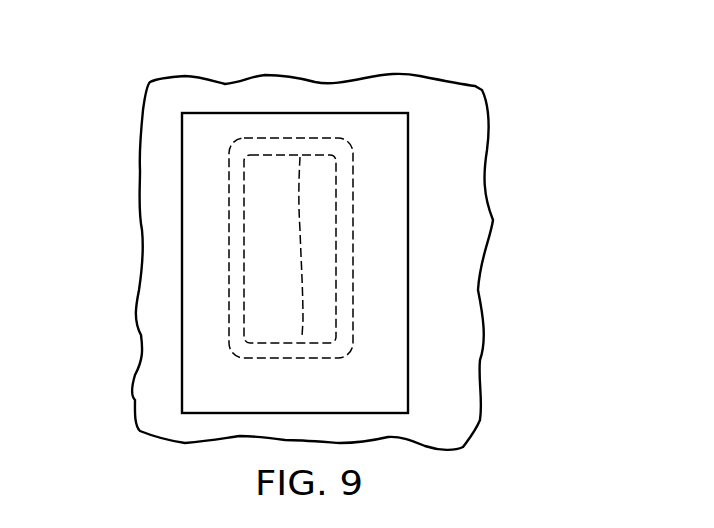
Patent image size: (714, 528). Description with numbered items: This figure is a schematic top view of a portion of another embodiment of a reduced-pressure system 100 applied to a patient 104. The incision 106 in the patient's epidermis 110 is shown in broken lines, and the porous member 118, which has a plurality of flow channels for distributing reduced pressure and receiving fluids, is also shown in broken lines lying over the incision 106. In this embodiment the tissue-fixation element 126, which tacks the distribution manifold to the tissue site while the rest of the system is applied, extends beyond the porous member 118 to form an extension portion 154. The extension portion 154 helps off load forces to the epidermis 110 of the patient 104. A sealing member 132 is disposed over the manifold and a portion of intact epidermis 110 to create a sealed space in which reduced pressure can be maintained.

The reduced-pressure system 100 is at (468, 50).
The patient 104 is at (448, 375).
The epidermis 110 is at (480, 323).
The sealing member 132 is at (403, 233).
The tissue-fixation element 126 is at (252, 138).
The porous member 118 is at (283, 167).
The extension portion 154 is at (238, 203).
The incision 106 is at (300, 172).